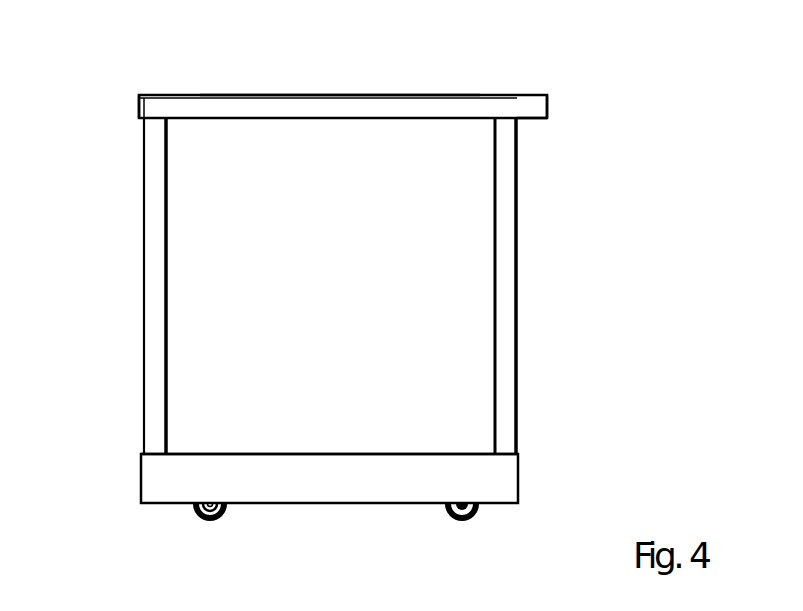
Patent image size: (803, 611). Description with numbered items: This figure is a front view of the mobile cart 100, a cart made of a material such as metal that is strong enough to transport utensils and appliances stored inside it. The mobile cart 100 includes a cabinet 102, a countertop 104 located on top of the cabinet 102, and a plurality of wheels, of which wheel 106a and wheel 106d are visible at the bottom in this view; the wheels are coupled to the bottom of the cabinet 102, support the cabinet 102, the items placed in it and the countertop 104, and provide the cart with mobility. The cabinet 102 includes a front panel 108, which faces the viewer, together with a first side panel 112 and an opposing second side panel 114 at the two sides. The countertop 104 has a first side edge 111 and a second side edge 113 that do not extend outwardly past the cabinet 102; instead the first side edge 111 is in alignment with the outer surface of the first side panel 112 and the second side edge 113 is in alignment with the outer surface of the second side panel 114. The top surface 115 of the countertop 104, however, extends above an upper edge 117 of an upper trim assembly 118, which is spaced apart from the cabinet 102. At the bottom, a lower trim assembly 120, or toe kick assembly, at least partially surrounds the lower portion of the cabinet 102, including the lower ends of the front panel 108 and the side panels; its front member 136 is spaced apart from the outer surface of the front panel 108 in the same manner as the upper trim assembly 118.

The mobile cart 100 is at (599, 219).
The cabinet 102 is at (530, 250).
The countertop 104 is at (252, 83).
The wheel 106a is at (212, 520).
The wheel 106d is at (462, 522).
The front panel 108 is at (205, 305).
The first side edge 111 is at (517, 95).
The first side panel 112 is at (516, 408).
The second side edge 113 is at (139, 95).
The second side panel 114 is at (143, 172).
The top surface 115 is at (357, 95).
The upper edge 117 is at (535, 97).
The upper trim assembly 118 is at (542, 129).
The lower trim assembly 120 is at (464, 447).
The front member 136 is at (320, 485).